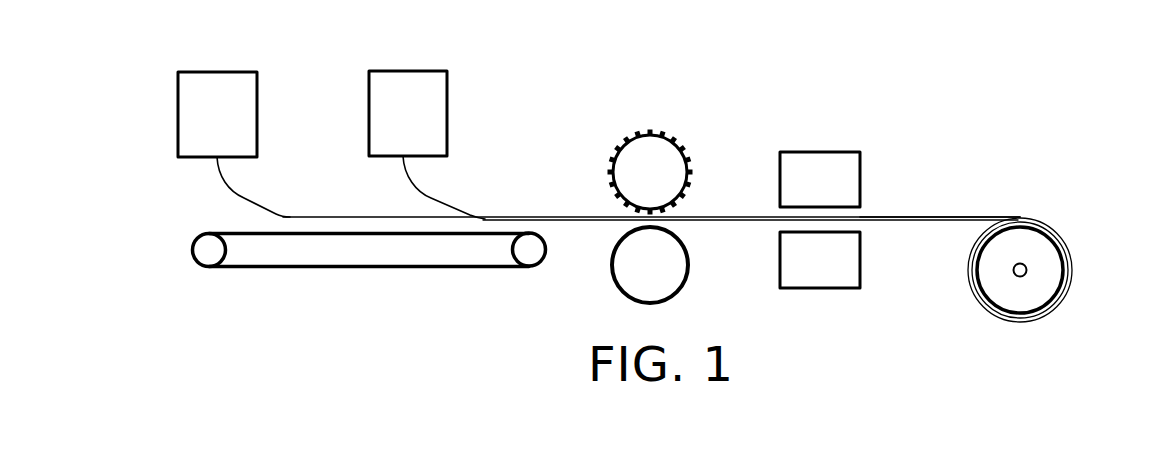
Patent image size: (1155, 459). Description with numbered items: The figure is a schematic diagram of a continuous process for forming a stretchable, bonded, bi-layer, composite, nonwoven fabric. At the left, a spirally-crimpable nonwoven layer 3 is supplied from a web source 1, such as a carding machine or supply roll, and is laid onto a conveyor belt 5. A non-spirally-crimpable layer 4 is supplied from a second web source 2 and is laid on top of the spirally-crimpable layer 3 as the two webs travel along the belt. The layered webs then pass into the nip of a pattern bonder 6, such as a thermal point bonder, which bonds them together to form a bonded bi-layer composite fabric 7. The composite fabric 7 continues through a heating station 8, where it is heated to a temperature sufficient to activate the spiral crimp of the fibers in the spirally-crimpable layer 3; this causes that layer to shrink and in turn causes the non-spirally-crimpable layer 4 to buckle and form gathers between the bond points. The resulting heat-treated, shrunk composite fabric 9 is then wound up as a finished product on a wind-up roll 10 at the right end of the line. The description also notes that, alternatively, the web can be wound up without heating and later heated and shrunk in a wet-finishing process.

The web source 1 is at (178, 104).
The second web source 2 is at (369, 104).
The spirally-crimpable nonwoven layer 3 is at (246, 199).
The non-spirally-crimpable layer 4 is at (442, 198).
The conveyor belt 5 is at (343, 268).
The pattern bonder 6 is at (622, 289).
The bonded bi-layer composite fabric 7 is at (730, 216).
The heating station 8 is at (868, 162).
The heat-treated, shrunk composite fabric 9 is at (913, 217).
The wind-up roll 10 is at (1069, 326).